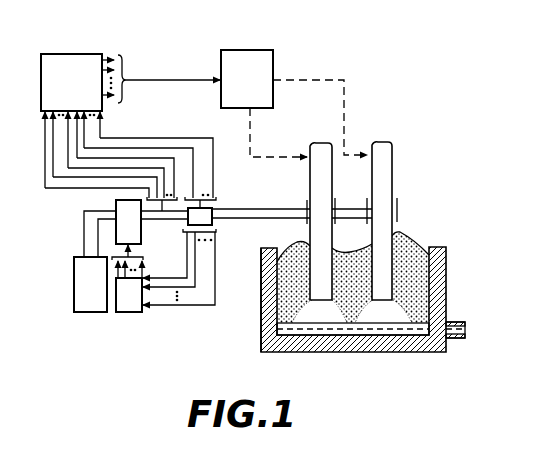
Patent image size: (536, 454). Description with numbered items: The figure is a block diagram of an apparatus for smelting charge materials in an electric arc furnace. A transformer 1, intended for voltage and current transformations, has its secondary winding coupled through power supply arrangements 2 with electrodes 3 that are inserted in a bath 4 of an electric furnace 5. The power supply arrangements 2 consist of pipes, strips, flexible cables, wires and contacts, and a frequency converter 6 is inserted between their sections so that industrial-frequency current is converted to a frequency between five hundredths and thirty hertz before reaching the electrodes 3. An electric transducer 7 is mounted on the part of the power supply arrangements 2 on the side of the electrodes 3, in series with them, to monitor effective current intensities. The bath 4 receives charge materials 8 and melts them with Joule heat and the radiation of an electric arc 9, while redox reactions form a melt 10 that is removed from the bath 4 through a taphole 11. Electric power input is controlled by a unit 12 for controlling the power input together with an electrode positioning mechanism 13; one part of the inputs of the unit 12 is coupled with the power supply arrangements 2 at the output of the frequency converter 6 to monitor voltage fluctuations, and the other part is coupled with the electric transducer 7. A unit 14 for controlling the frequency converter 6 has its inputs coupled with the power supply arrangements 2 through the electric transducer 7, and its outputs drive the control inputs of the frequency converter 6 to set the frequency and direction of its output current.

The transformer 1 is at (95, 261).
The power supply arrangements 2 is at (275, 209).
The electrodes 3 is at (378, 184).
The bath 4 is at (437, 247).
The electric furnace 5 is at (255, 289).
The frequency converter 6 is at (152, 222).
The electric transducer 7 is at (207, 219).
The charge materials 8 is at (278, 318).
The electric arc 9 is at (314, 316).
The melt 10 is at (375, 329).
The taphole 11 is at (452, 342).
The unit for controlling the power input 12 is at (130, 121).
The electrode positioning mechanism 13 is at (294, 103).
The unit for controlling the frequency converter 14 is at (163, 272).